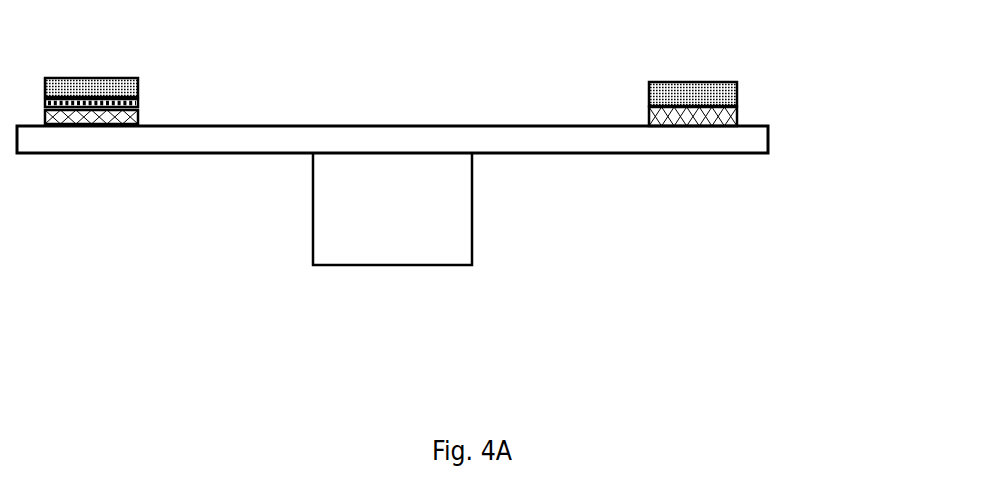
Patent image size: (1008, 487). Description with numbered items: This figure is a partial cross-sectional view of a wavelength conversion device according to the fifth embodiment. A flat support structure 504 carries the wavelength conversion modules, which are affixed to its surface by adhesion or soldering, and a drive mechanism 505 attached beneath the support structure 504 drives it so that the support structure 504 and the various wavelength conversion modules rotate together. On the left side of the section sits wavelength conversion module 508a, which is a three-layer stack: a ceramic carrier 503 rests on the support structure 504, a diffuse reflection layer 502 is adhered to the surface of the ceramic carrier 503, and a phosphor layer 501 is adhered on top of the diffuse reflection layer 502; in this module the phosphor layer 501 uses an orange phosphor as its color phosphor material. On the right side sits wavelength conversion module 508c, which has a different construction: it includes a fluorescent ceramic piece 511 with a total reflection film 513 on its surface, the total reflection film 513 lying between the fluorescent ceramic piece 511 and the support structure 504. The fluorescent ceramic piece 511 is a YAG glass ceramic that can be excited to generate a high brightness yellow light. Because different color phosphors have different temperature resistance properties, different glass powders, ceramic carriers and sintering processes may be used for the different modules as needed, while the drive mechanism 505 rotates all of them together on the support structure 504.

The phosphor layer 501 is at (88, 88).
The diffuse reflection layer 502 is at (137, 100).
The ceramic carrier 503 is at (134, 93).
The wavelength conversion module 508a is at (178, 62).
The fluorescent ceramic piece 511 is at (680, 100).
The total reflection film 513 is at (739, 85).
The wavelength conversion module 508c is at (781, 63).
The support structure 504 is at (596, 142).
The drive mechanism 505 is at (425, 247).